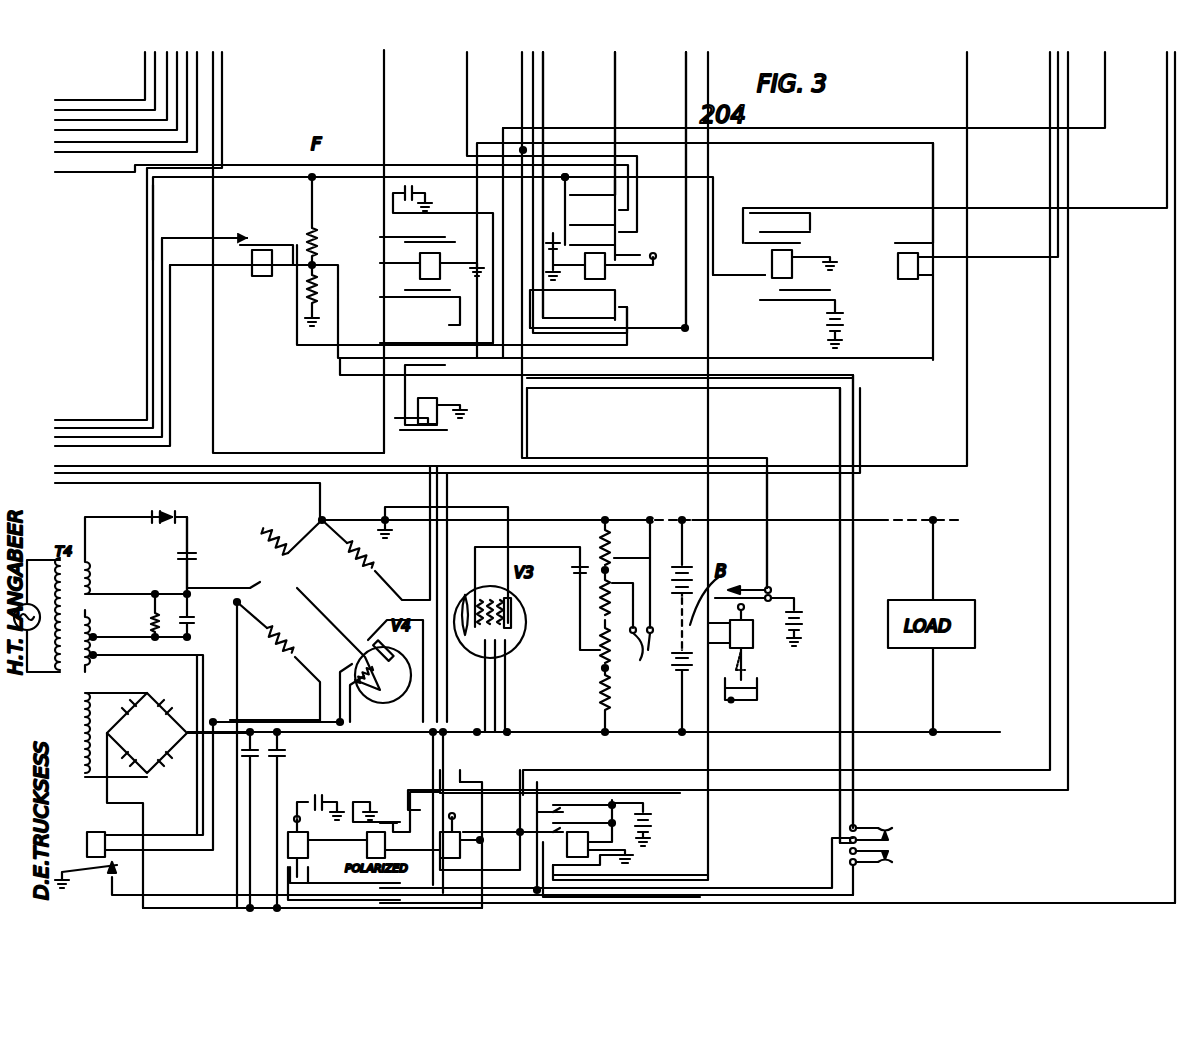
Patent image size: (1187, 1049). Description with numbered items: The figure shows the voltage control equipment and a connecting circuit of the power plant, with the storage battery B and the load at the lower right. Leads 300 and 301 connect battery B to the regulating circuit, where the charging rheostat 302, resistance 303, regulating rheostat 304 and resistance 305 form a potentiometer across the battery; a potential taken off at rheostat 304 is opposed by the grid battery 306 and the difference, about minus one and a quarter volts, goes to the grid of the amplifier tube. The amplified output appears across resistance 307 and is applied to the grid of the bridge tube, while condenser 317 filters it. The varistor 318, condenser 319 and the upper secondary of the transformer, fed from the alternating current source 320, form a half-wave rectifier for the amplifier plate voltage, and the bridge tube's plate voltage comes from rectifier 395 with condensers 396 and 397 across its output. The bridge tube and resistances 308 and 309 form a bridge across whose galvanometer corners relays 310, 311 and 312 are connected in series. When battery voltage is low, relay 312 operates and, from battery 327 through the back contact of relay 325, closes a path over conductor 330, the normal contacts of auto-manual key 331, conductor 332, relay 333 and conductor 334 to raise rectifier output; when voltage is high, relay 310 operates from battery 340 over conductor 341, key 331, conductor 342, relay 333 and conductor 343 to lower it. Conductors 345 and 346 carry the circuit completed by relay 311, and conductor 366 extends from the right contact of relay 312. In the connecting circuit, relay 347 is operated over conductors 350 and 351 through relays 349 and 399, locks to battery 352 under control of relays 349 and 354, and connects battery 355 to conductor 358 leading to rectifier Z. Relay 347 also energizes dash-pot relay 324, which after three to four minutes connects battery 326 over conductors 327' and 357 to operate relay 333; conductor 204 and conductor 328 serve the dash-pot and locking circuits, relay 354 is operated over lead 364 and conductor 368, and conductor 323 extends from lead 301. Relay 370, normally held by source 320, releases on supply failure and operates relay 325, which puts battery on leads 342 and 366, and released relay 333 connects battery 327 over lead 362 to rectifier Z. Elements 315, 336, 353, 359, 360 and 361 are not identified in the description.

The conductor 204 is at (698, 113).
The lead 300 is at (680, 520).
The lead 301 is at (622, 732).
The charging rheostat 302 is at (610, 555).
The resistance 303 is at (600, 613).
The regulating rheostat 304 is at (600, 654).
The resistance 305 is at (600, 690).
The grid battery 306 is at (578, 576).
The resistance 307 is at (150, 627).
The resistance 308 is at (280, 645).
The resistance 309 is at (374, 560).
The relay 310 is at (308, 845).
The relay 311 is at (367, 855).
The relay 312 is at (440, 838).
The switch 315 is at (642, 668).
The condenser 317 is at (205, 611).
The varistor 318 is at (160, 525).
The condenser 319 is at (178, 556).
The source 320 is at (18, 605).
The conductor 323 is at (447, 480).
The dash-pot relay 324 is at (748, 640).
The relay 325 is at (590, 848).
The grounded battery 326 is at (802, 620).
The grounded battery 327 is at (654, 824).
The conductor 327' is at (548, 423).
The conductor 328 is at (322, 453).
The conductor 330 is at (738, 885).
The auto-manual key 331 is at (886, 635).
The conductor 332 is at (647, 380).
The relay 333 is at (606, 272).
The conductor 334 is at (543, 116).
The conductor 336 is at (145, 486).
The grounded battery 340 is at (330, 800).
The conductor 341 is at (342, 900).
The conductor 342 is at (758, 388).
The conductor 343 is at (615, 116).
The conductor 345 is at (1175, 624).
The conductor 346 is at (1068, 290).
The relay 347 is at (794, 257).
The relay 349 is at (433, 280).
The conductor 350 is at (838, 128).
The conductor 351 is at (988, 208).
The battery 352 is at (416, 192).
The conductor 353 is at (848, 145).
The relay 354 is at (903, 279).
The battery 355 is at (843, 322).
The conductor 357 is at (738, 145).
The conductor 358 is at (153, 211).
The resistor 359 is at (300, 348).
The relay 360 is at (266, 277).
The conductor 361 is at (162, 257).
The lead 362 is at (170, 271).
The lead 364 is at (78, 476).
The conductor 366 is at (1050, 569).
The conductor 368 is at (347, 362).
The relay 370 is at (87, 840).
The rectifier 395 is at (178, 800).
The condenser 396 is at (262, 753).
The condenser 397 is at (280, 760).
The relay 399 is at (440, 403).